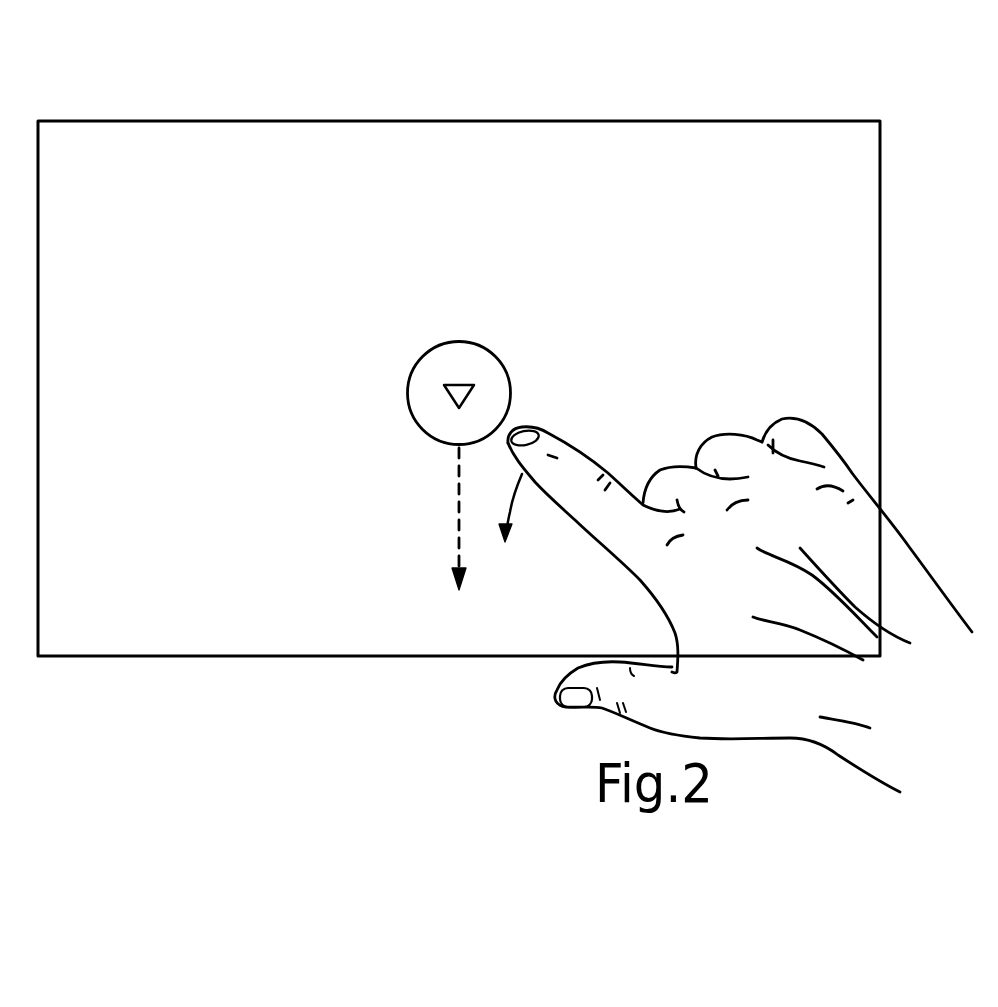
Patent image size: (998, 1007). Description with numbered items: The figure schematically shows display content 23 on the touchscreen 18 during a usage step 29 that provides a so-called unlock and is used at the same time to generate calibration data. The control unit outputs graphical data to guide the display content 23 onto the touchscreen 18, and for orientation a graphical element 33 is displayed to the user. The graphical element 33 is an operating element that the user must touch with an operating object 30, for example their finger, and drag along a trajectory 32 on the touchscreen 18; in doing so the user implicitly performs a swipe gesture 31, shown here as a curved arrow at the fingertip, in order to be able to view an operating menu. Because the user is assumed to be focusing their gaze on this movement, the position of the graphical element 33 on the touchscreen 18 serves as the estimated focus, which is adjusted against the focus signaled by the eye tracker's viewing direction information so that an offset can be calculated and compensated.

The usage step 29 is at (82, 97).
The touchscreen 18 is at (283, 120).
The display content 23 is at (404, 147).
The graphical element 33 is at (459, 342).
The trajectory 32 is at (457, 505).
The operating object 30 is at (578, 451).
The swipe gesture 31 is at (513, 498).